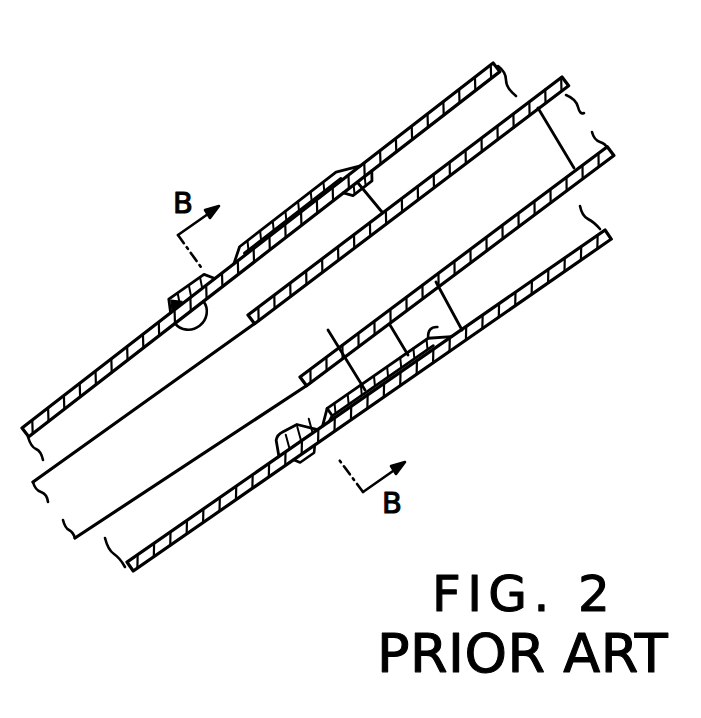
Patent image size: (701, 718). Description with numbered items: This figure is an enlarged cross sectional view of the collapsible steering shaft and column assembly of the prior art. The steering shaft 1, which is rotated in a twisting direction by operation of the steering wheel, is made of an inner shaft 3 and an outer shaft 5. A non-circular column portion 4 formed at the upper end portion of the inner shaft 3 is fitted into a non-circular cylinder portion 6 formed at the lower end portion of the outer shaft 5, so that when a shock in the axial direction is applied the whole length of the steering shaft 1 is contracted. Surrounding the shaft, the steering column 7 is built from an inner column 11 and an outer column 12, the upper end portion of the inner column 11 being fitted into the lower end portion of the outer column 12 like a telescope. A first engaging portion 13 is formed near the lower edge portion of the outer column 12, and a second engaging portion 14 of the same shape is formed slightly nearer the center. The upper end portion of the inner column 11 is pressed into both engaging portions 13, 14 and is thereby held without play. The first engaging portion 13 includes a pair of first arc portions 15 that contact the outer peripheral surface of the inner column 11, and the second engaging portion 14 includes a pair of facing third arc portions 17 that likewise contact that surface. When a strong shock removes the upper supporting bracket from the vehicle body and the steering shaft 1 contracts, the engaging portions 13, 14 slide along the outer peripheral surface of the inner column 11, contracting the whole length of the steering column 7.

The steering shaft 1 is at (484, 274).
The inner shaft 3 is at (158, 455).
The non-circular column portion 4 is at (383, 400).
The outer shaft 5 is at (545, 92).
The non-circular cylinder portion 6 is at (418, 377).
The steering column 7 is at (375, 135).
The inner column 11 is at (87, 380).
The outer column 12 is at (563, 297).
The first engaging portion 13 is at (322, 445).
The second engaging portion 14 is at (300, 212).
The first arc portions 15 is at (165, 325).
The third arc portions 17 is at (332, 192).